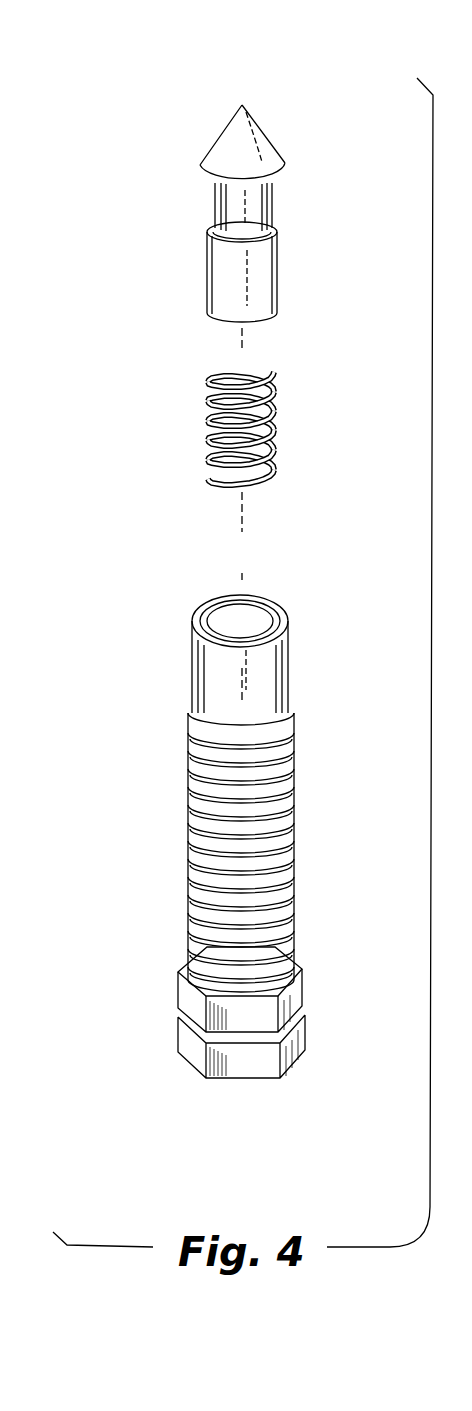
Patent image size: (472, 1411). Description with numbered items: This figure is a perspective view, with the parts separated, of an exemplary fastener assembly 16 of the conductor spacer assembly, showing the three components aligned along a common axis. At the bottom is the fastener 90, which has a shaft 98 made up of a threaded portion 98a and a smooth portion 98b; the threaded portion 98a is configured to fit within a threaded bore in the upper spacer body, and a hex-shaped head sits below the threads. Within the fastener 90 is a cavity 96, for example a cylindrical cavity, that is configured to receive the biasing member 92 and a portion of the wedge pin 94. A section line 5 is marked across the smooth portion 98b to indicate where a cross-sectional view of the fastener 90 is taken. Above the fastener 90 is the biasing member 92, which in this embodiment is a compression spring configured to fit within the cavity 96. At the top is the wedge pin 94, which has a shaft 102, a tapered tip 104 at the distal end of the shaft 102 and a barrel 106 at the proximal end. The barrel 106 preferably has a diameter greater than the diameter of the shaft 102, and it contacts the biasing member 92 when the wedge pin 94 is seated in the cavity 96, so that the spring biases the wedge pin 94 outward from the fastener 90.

The fastener assembly 16 is at (93, 193).
The wedge pin 94 is at (322, 190).
The tapered tip 104 is at (212, 142).
The shaft 102 is at (215, 212).
The barrel 106 is at (208, 280).
The biasing member 92 is at (300, 403).
The fastener 90 is at (343, 757).
The cavity 96 is at (250, 630).
The shaft 98 is at (182, 835).
The smooth portion 98b is at (192, 670).
The threaded portion 98a is at (188, 905).
The section line 5- 5 is at (236, 620).